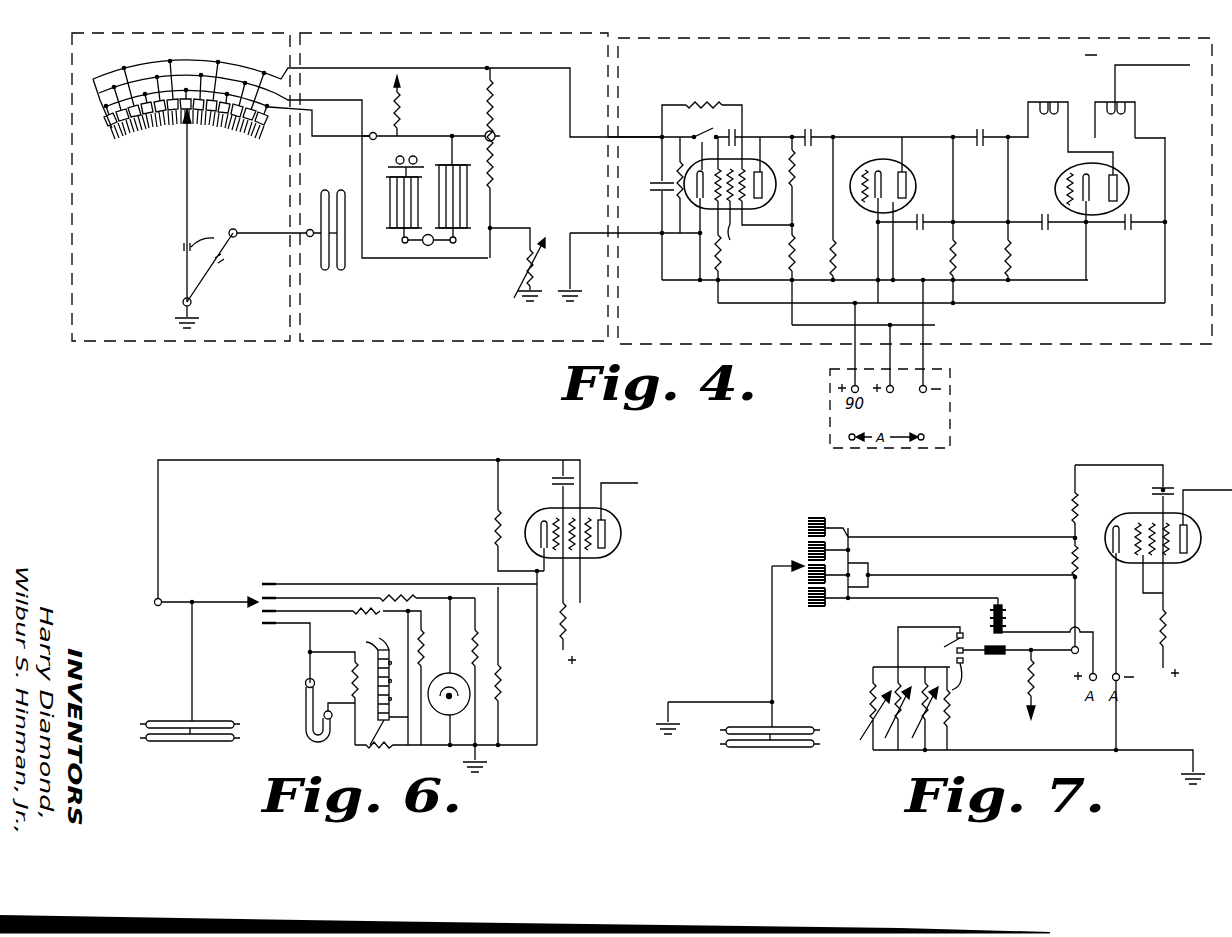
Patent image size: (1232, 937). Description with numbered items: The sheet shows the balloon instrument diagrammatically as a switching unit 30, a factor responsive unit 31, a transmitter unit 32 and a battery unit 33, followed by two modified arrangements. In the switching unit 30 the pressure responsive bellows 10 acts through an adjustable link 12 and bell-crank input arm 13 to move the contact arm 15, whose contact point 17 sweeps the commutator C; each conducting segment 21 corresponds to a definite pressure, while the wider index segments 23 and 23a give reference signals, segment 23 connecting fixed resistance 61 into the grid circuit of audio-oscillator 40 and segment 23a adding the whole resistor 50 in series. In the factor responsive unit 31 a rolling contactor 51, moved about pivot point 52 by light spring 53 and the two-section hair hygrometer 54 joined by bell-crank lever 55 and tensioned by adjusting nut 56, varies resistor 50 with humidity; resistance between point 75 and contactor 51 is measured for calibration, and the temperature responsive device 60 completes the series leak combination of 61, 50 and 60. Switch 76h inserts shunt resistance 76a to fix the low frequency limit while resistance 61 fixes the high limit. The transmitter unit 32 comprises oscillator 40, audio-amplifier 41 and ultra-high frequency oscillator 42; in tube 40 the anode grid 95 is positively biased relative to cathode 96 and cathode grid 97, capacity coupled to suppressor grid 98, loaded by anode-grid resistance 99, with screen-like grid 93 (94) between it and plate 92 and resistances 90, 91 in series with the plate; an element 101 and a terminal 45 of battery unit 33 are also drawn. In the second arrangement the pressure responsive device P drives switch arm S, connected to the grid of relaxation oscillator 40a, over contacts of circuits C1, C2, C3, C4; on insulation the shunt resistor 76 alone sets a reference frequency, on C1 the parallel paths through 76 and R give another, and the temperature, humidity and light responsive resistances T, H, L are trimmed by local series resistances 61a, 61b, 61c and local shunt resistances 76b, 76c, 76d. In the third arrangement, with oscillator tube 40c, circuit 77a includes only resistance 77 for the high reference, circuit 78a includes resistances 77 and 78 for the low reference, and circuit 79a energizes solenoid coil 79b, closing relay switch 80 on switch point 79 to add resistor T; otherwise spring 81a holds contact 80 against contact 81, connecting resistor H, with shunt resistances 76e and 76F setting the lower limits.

In FIG. 4, the commutator C is at (108, 130).
In FIG. 4, the reference contact segment 23 is at (115, 77).
In FIG. 4, the second reference contact segment 23a is at (162, 82).
In FIG. 4, the conducting segments 21 is at (233, 92).
In FIG. 4, the contact point 17 is at (178, 126).
In FIG. 4, the contact arm 15 is at (186, 210).
In FIG. 4, the input arm 13 is at (233, 243).
In FIG. 4, the adjustable link 12 is at (258, 232).
In FIG. 4, the pressure responsive bellows 10 is at (345, 268).
In FIG. 4, the switching unit 30 is at (160, 345).
In FIG. 4, the factor responsive unit 31 is at (462, 345).
In FIG. 4, the transmitter unit 32 is at (800, 350).
In FIG. 4, the battery unit 33 is at (825, 408).
In FIG. 4, the calibration point 75 is at (490, 68).
In FIG. 4, the pivot point 52 is at (373, 132).
In FIG. 4, the light spring 53 is at (400, 111).
In FIG. 4, the adjusting nut 56 is at (413, 156).
In FIG. 4, the rolling contactor 51 is at (486, 133).
In FIG. 4, the humidity resistance 50 is at (500, 90).
In FIG. 4, the hair hygrometer 54 is at (395, 205).
In FIG. 4, the bell-crank lever 55 is at (438, 250).
In FIG. 4, the temperature responsive device 60 is at (523, 253).
In FIG. 4, the fixed series resistance 61 is at (697, 103).
In FIG. 4, the shunt switch 76h is at (697, 135).
In FIG. 4, the shunt resistance 76a is at (677, 175).
In FIG. 4, the condenser 101 is at (655, 188).
In FIG. 4, the cathode grid 97 is at (702, 190).
In FIG. 4, the cathode 96 is at (702, 168).
In FIG. 4, the anode grid 95 is at (720, 176).
In FIG. 4, the anode-grid resistance 99 is at (729, 248).
In FIG. 4, the screen-like grid 94 is at (738, 226).
In FIG. 4, the plate series resistance 90 is at (792, 158).
In FIG. 4, the control or suppressor grid 98 is at (794, 225).
In FIG. 4, the plate 92 is at (764, 173).
In FIG. 4, the audio-oscillator 40 is at (778, 185).
In FIG. 4, the screen-like grid 93 is at (748, 196).
In FIG. 4, the plate series resistance 91 is at (837, 262).
In FIG. 4, the audio-amplifier 41 is at (912, 178).
In FIG. 4, the ultra-high frequency oscillator 42 is at (1126, 180).
In FIG. 4, the battery terminal 45 is at (889, 369).
In FIG. 6, the switch arm S is at (245, 600).
In FIG. 7, the switch arm S is at (770, 626).
In FIG. 6, the pressure responsive device P is at (210, 722).
In FIG. 7, the pressure responsive device P is at (795, 724).
In FIG. 6, the first circuit C1 is at (313, 578).
In FIG. 6, the second circuit C2 is at (318, 603).
In FIG. 6, the third circuit C3 is at (335, 608).
In FIG. 6, the fourth circuit C4 is at (318, 626).
In FIG. 6, the local series resistance 61a is at (372, 608).
In FIG. 6, the local series resistance 61b is at (393, 750).
In FIG. 6, the local series resistance 61c is at (405, 590).
In FIG. 6, the local shunt resistance 76b is at (352, 667).
In FIG. 6, the local shunt resistance 76c is at (426, 642).
In FIG. 6, the local shunt resistance 76d is at (478, 652).
In FIG. 6, the shunt reference resistor 76 is at (494, 530).
In FIG. 6, the fixed resistance R is at (500, 710).
In FIG. 6, the light-intensity responsive resistance L is at (442, 718).
In FIG. 6, the humidity responsive resistance H is at (382, 750).
In FIG. 7, the humidity responsive resistance H is at (920, 738).
In FIG. 6, the temperature responsive resistance T is at (304, 735).
In FIG. 7, the temperature responsive resistance T is at (878, 732).
In FIG. 6, the relaxation oscillator 40a is at (617, 523).
In FIG. 7, the fixed resistance 77 is at (1068, 505).
In FIG. 7, the high reference circuit 77a is at (897, 536).
In FIG. 7, the fixed resistance 78 is at (1068, 560).
In FIG. 7, the low reference circuit 78a is at (870, 574).
In FIG. 7, the switch point 79 is at (955, 637).
In FIG. 7, the temperature circuit 79a is at (890, 600).
In FIG. 7, the solenoid coil 79b is at (1005, 617).
In FIG. 7, the relay switch 80 is at (966, 656).
In FIG. 7, the relay contact 81 is at (949, 700).
In FIG. 7, the spring 81a is at (1027, 678).
In FIG. 7, the local shunt resistance 76e is at (870, 700).
In FIG. 7, the local shunt resistance 76F is at (955, 730).
In FIG. 7, the vacuum tube 40c is at (1190, 520).